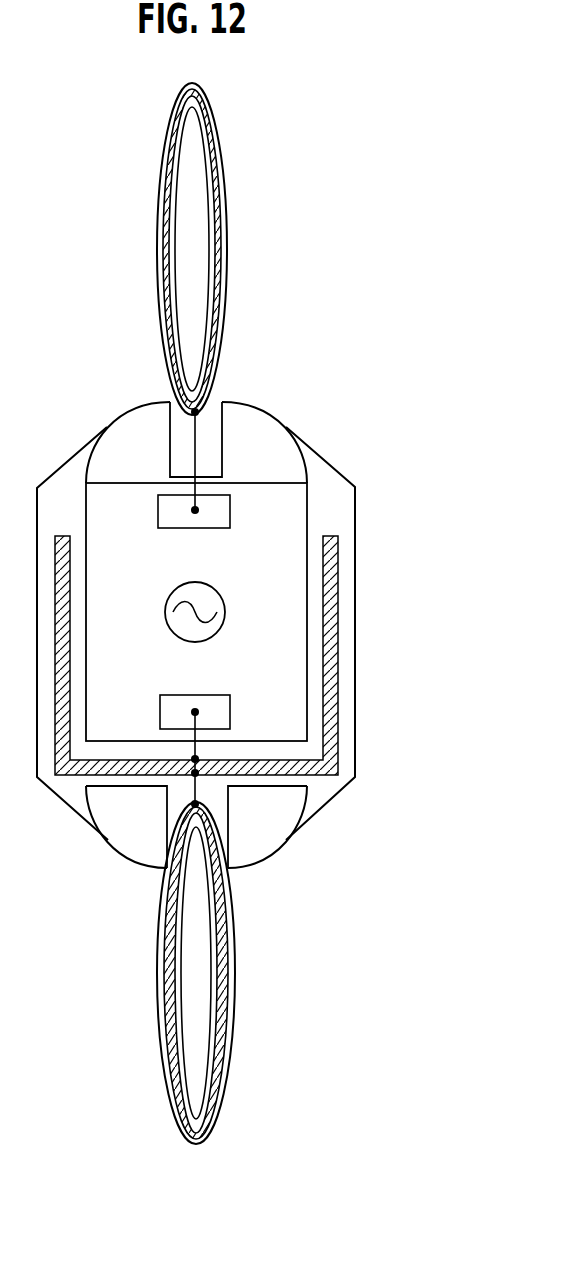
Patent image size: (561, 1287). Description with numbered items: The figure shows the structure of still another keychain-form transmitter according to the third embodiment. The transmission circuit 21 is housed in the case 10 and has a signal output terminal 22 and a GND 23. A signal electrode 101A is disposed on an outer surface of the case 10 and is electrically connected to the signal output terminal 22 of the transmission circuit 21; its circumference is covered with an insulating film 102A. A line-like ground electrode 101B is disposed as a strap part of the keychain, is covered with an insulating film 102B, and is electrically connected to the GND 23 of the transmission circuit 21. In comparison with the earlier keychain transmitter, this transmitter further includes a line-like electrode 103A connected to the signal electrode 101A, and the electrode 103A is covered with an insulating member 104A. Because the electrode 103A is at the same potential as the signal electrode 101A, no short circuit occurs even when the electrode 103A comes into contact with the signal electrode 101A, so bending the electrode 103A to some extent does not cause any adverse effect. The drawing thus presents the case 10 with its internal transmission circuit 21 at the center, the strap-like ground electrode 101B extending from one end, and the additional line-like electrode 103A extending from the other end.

The case 10 is at (307, 506).
The transmission circuit 21 is at (226, 610).
The signal output terminal 22 is at (232, 710).
The GND 23 is at (232, 510).
The signal electrode 101A is at (338, 675).
The insulating film 102A is at (355, 607).
The ground electrode 101B is at (219, 240).
The insulating film 102B is at (225, 192).
The line-like electrode 103A is at (223, 955).
The insulating member 104A is at (231, 900).